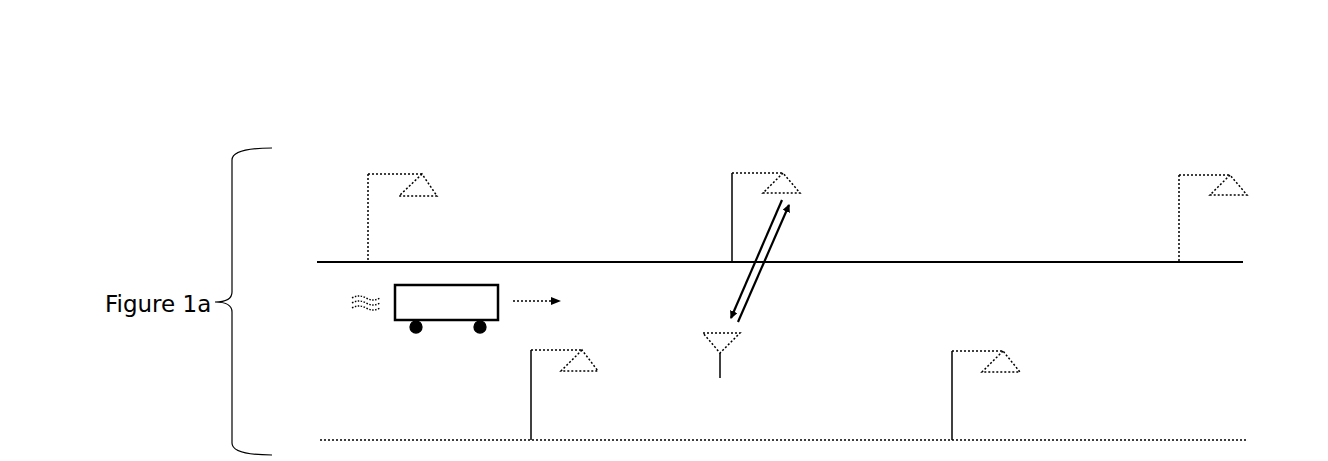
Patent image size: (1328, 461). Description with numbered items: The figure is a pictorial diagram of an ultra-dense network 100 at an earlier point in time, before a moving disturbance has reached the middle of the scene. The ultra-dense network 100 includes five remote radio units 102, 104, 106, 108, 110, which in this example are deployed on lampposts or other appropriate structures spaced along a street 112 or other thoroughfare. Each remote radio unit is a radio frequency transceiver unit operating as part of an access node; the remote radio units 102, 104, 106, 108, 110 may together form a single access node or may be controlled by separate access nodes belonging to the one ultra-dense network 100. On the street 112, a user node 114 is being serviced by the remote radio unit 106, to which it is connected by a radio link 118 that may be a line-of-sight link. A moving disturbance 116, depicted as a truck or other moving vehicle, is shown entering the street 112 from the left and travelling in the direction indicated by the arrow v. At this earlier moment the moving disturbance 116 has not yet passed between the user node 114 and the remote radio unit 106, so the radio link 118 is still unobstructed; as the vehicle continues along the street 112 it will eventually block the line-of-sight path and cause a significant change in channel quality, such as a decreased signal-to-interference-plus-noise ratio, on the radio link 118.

The ultra-dense network 100 is at (960, 94).
The remote radio unit 102 is at (428, 187).
The remote radio unit 104 is at (588, 361).
The remote radio unit 106 is at (789, 185).
The remote radio unit 108 is at (1009, 363).
The remote radio unit 110 is at (1243, 190).
The street 112 is at (782, 351).
The user node 114 is at (728, 346).
The moving disturbance 116 is at (456, 309).
The radio link 118 is at (772, 282).